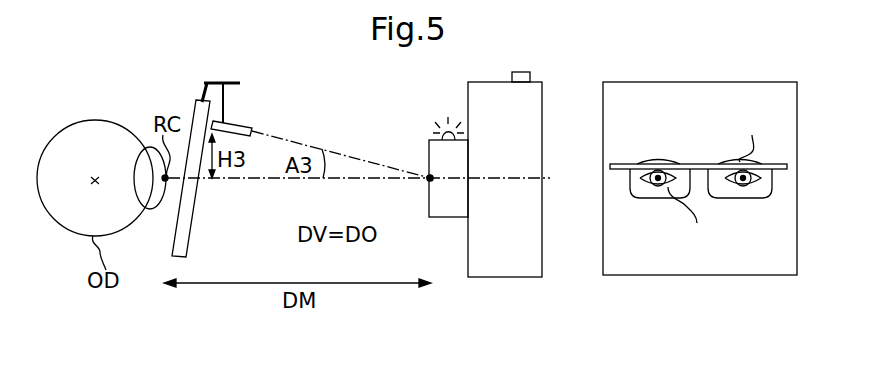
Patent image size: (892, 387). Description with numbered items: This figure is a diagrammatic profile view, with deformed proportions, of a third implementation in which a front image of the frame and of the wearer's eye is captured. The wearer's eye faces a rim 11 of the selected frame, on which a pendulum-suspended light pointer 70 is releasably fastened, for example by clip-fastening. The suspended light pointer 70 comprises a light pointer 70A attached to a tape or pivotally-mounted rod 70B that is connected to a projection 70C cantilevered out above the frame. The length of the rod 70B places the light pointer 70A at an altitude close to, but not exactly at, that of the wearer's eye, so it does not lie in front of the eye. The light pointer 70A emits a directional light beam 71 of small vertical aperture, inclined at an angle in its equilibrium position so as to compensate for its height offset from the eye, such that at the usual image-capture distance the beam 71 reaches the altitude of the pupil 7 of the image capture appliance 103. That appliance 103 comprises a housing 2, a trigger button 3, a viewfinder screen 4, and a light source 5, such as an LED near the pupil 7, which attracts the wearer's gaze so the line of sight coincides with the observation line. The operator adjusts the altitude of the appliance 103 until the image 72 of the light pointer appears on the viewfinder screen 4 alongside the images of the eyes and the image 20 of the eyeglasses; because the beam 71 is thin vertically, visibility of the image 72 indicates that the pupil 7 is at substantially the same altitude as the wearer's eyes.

The rim 11 is at (196, 102).
The pendulum-suspended light pointer 70 is at (245, 138).
The light pointer 70A is at (237, 120).
The pivotally-mounted rod 70B is at (226, 99).
The projection 70C is at (217, 81).
The directional light beam 71 is at (308, 145).
The pupil of the image capture appliance 7 is at (428, 178).
The light source 5 is at (447, 126).
The trigger button 3 is at (524, 70).
The housing 2 is at (485, 277).
The image capture appliance 103 is at (511, 211).
The viewfinder screen 4 is at (700, 203).
The image of the suspended light pointer 72 is at (618, 164).
The image of the eyeglasses 20 is at (653, 197).